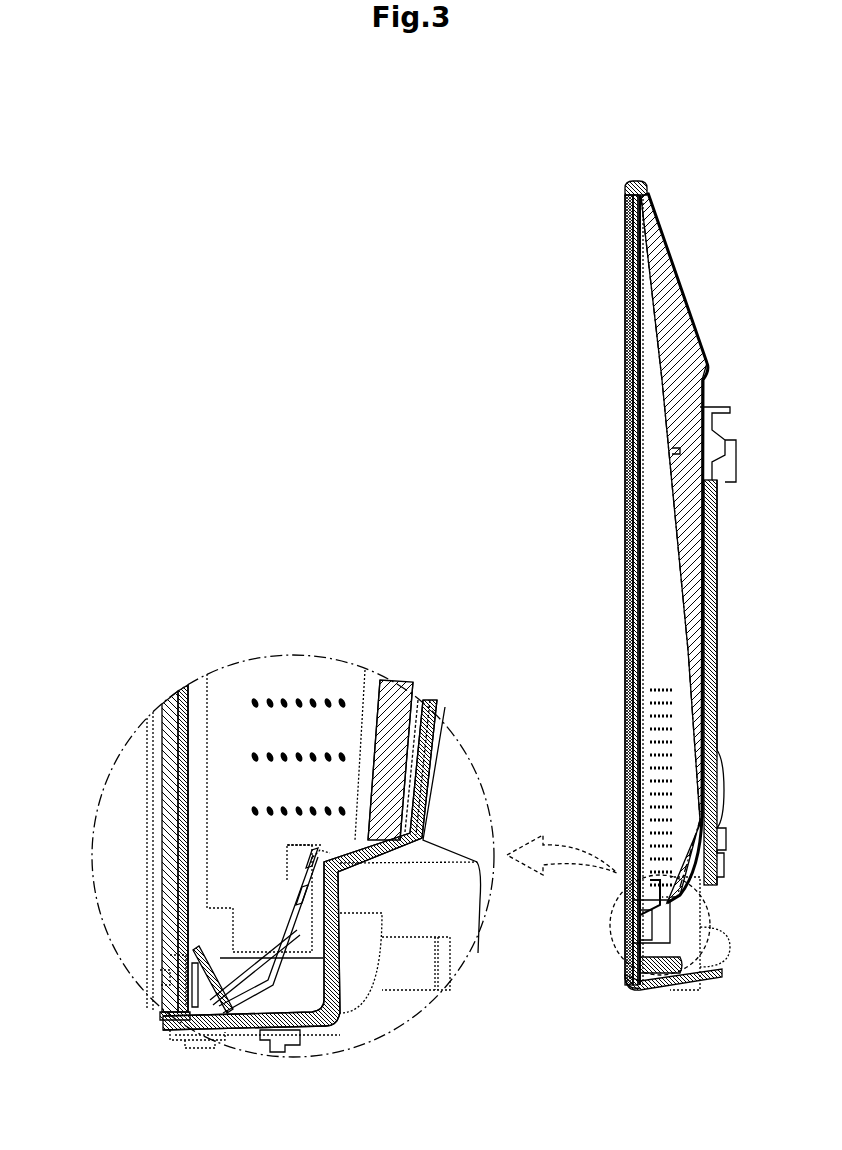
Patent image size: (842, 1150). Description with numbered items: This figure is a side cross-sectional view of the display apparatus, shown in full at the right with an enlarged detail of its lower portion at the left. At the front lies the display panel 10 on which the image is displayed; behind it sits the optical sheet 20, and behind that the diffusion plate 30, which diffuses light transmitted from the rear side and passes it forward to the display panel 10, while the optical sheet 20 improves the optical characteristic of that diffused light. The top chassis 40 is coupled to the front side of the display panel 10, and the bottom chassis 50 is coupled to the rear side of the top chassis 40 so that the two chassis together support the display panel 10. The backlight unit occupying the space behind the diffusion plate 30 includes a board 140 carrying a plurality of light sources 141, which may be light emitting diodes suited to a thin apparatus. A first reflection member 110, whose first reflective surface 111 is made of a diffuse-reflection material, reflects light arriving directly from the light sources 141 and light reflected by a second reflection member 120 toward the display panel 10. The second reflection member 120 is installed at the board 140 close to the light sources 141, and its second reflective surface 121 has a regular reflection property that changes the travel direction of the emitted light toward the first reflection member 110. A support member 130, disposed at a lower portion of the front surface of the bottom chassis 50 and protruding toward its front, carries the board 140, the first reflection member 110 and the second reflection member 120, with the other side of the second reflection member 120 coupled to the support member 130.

The display panel 10 is at (627, 268).
The optical sheet 20 is at (627, 243).
The diffusion plate 30 is at (626, 216).
The top chassis 40 is at (634, 180).
The bottom chassis 50 is at (670, 268).
The first reflection member 110 is at (690, 336).
The first reflective surface 111 is at (362, 675).
The second reflection member 120 is at (288, 930).
The second reflective surface 121 is at (300, 880).
The support member 130 is at (258, 1052).
The board 140 is at (226, 1046).
The light source 141 is at (163, 1018).